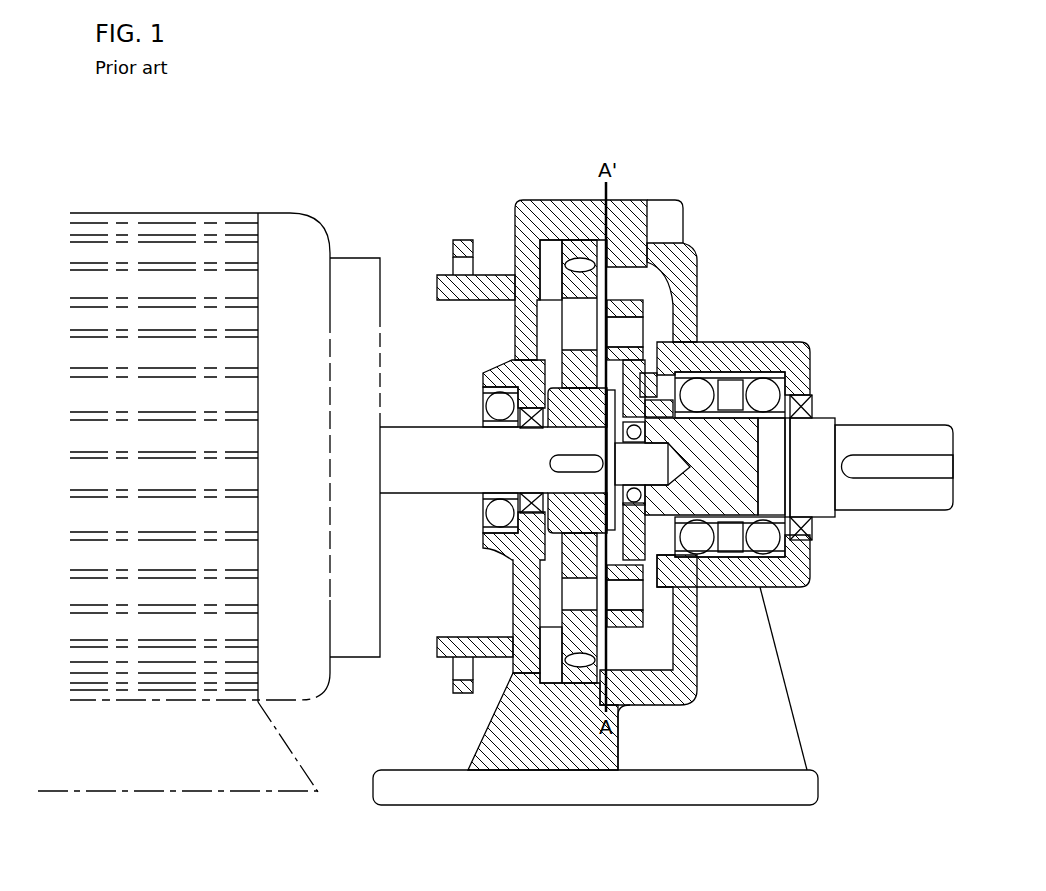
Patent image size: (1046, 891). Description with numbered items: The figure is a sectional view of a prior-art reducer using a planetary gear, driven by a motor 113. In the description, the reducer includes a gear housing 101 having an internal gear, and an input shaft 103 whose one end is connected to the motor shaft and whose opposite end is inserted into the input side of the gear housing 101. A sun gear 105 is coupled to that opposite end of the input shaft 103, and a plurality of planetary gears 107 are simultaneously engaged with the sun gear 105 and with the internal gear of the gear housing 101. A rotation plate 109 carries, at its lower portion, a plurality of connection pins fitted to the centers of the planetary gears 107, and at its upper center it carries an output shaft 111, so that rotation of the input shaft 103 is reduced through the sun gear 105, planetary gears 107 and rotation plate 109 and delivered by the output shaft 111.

The gear housing 101 is at (543, 217).
The input shaft 103 is at (497, 460).
The pinion hub 105 is at (543, 395).
The ring gear 107 is at (590, 287).
The intermediate gear 109 is at (632, 357).
The output shaft 111 is at (730, 467).
The motor 113 is at (272, 242).